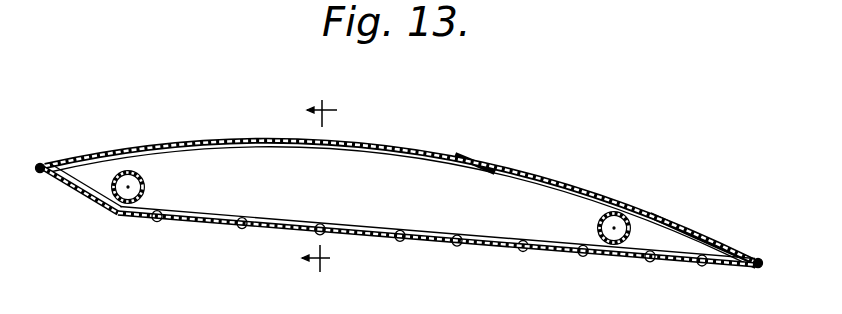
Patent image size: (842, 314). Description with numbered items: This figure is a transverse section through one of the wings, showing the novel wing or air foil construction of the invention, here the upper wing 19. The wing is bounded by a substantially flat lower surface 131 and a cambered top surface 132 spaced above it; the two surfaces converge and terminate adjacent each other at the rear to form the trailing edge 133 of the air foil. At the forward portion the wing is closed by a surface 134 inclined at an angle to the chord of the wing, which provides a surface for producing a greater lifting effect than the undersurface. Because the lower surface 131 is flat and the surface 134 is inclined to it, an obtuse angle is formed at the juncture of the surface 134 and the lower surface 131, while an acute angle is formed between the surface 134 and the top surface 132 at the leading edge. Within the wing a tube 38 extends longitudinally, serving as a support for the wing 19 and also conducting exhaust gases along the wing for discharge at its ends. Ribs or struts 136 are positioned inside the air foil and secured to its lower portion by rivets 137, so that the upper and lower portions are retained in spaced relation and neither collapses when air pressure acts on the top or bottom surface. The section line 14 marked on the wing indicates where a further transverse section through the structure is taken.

The section line 14 is at (319, 186).
The upper wing 19 is at (673, 225).
The tube 38 is at (145, 183).
The lower surface 131 is at (491, 246).
The cambered top surface 132 is at (400, 142).
The trailing edge 133 is at (754, 268).
The inclined forward surface 134 is at (88, 198).
The ribs or struts 136 is at (475, 180).
The rivets 137 is at (525, 250).